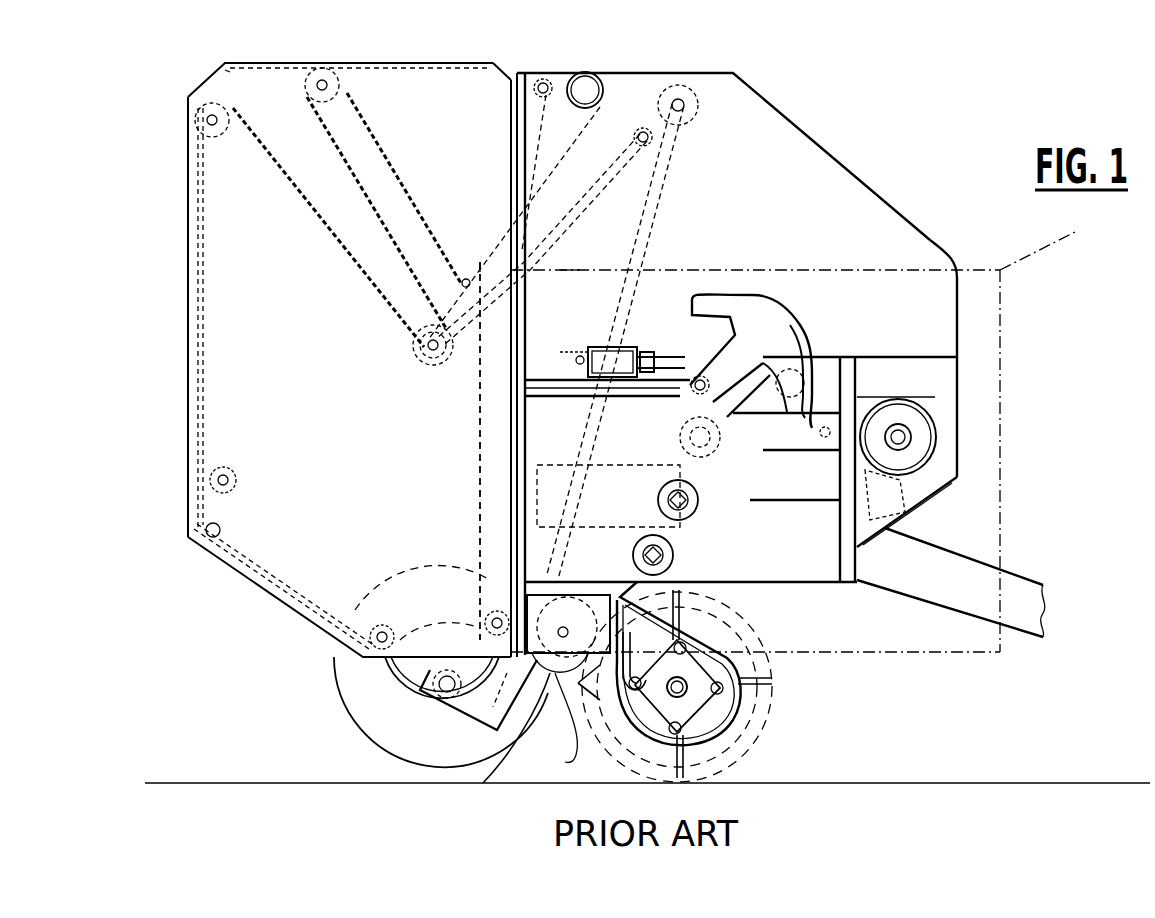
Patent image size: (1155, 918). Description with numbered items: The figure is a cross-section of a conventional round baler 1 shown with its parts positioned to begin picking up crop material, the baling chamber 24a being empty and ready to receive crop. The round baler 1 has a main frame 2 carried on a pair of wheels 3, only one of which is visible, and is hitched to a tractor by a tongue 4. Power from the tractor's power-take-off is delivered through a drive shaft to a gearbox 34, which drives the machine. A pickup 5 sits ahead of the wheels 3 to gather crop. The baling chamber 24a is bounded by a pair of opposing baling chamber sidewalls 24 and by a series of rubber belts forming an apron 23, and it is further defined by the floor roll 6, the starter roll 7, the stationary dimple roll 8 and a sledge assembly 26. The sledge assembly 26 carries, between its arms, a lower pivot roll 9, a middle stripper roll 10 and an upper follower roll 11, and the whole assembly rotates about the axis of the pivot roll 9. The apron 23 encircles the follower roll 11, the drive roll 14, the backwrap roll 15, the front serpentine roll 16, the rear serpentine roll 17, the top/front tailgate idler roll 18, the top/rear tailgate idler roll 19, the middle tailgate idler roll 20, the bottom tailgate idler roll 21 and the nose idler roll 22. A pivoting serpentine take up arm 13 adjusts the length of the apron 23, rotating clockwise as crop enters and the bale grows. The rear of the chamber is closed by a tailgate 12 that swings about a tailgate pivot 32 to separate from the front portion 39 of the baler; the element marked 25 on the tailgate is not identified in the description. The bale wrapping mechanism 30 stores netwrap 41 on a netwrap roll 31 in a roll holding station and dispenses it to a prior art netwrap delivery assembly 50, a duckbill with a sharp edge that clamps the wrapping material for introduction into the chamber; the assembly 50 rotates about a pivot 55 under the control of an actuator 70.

The round baler 1 is at (932, 102).
The main frame 2 is at (925, 228).
The wheels 3 is at (288, 743).
The tongue 4 is at (1020, 578).
The pickup 5 is at (812, 700).
The floor roll 6 is at (530, 728).
The starter roll 7 is at (674, 553).
The stationary dimple roll 8 is at (705, 505).
The pivot roll 9 is at (680, 434).
The stripper roll 10 is at (648, 420).
The follower roll 11 is at (578, 352).
The tailgate 12 is at (186, 327).
The serpentine take up arm 13 is at (507, 203).
The drive roll 14 is at (678, 104).
The backwrap roll 15 is at (637, 137).
The front serpentine roll 16 is at (495, 280).
The rear serpentine roll 17 is at (428, 351).
The top/front tailgate idler roll 18 is at (318, 82).
The top/rear tailgate idler roll 19 is at (206, 120).
The middle tailgate idler roll 20 is at (232, 482).
The bottom tailgate idler roll 21 is at (382, 630).
The nose idler roll 22 is at (490, 620).
The apron 23 is at (197, 392).
The baling chamber sidewalls 24 is at (292, 406).
The baling chamber 24a is at (500, 446).
The side panel 25 is at (234, 253).
The sledge assembly 26 is at (660, 330).
The bale wrapping mechanism 30 is at (935, 394).
The netwrap roll 31 is at (935, 452).
The tailgate pivot 32 is at (511, 100).
The gearbox 34 is at (805, 492).
The front portion 39 is at (868, 183).
The netwrap 41 is at (858, 393).
The netwrap delivery assembly 50 is at (770, 333).
The pivot 55 is at (703, 378).
The actuator 70 is at (600, 345).